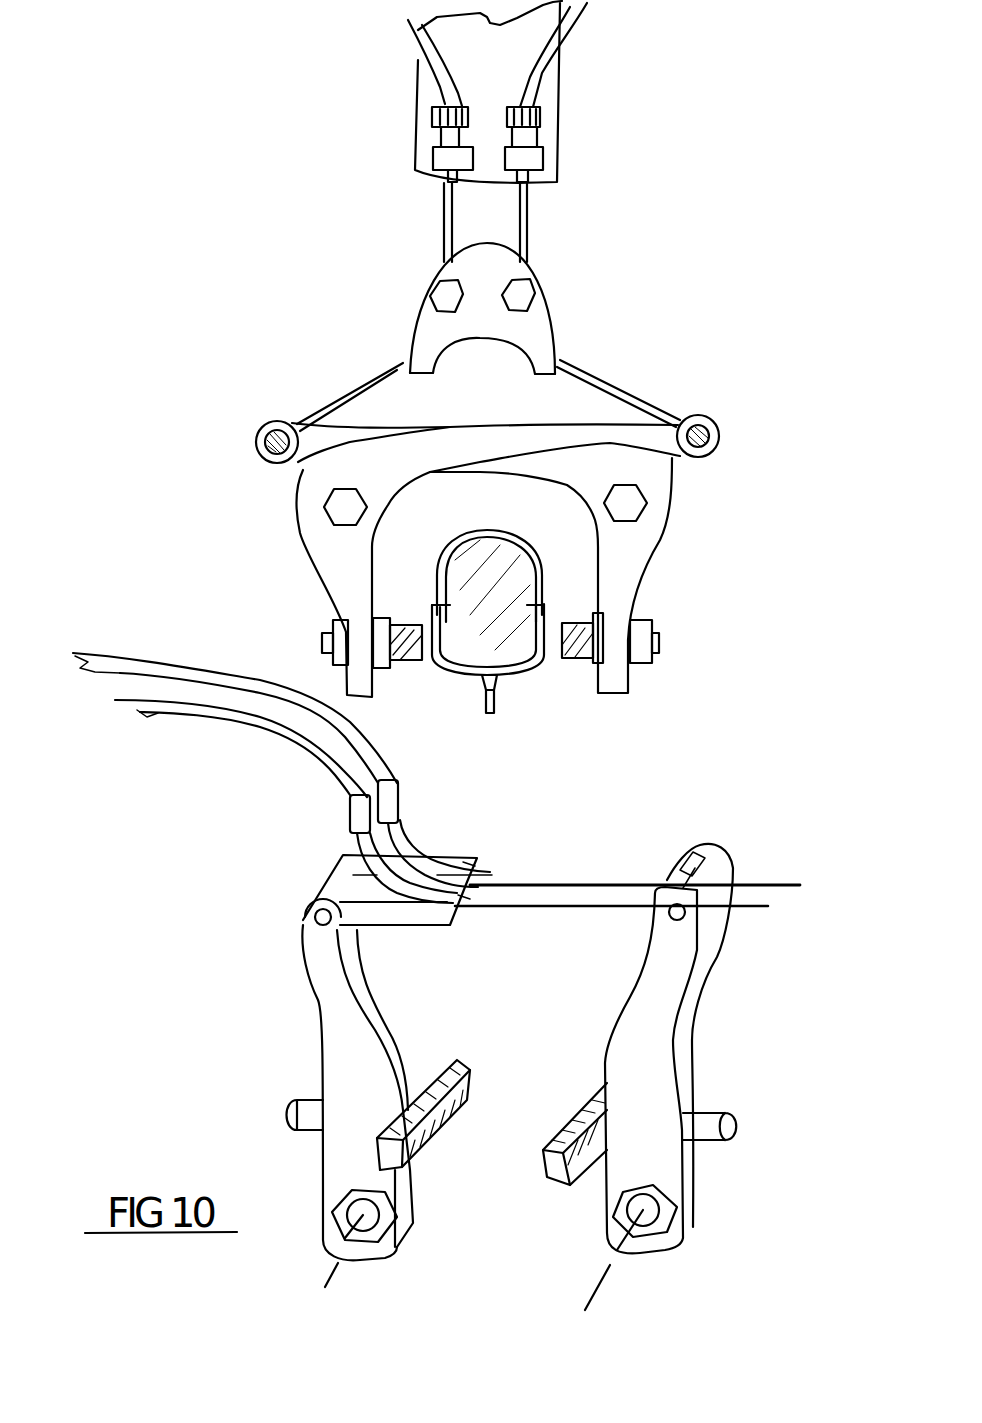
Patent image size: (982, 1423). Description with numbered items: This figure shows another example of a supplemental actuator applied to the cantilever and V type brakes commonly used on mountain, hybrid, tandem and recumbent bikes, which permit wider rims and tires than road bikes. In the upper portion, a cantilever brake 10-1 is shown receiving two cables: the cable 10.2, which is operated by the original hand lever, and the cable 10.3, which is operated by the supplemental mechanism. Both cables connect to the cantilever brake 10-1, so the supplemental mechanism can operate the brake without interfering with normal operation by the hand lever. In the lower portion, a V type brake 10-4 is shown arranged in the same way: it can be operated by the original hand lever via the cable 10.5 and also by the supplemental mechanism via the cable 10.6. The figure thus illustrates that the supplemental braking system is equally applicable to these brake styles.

The cable 10.2 is at (423, 46).
The cable 10.3 is at (567, 27).
The cantilever brake 10-1 is at (820, 251).
The cable 10.5 is at (133, 665).
The cable 10.6 is at (207, 708).
The V type brake 10-4 is at (802, 1043).